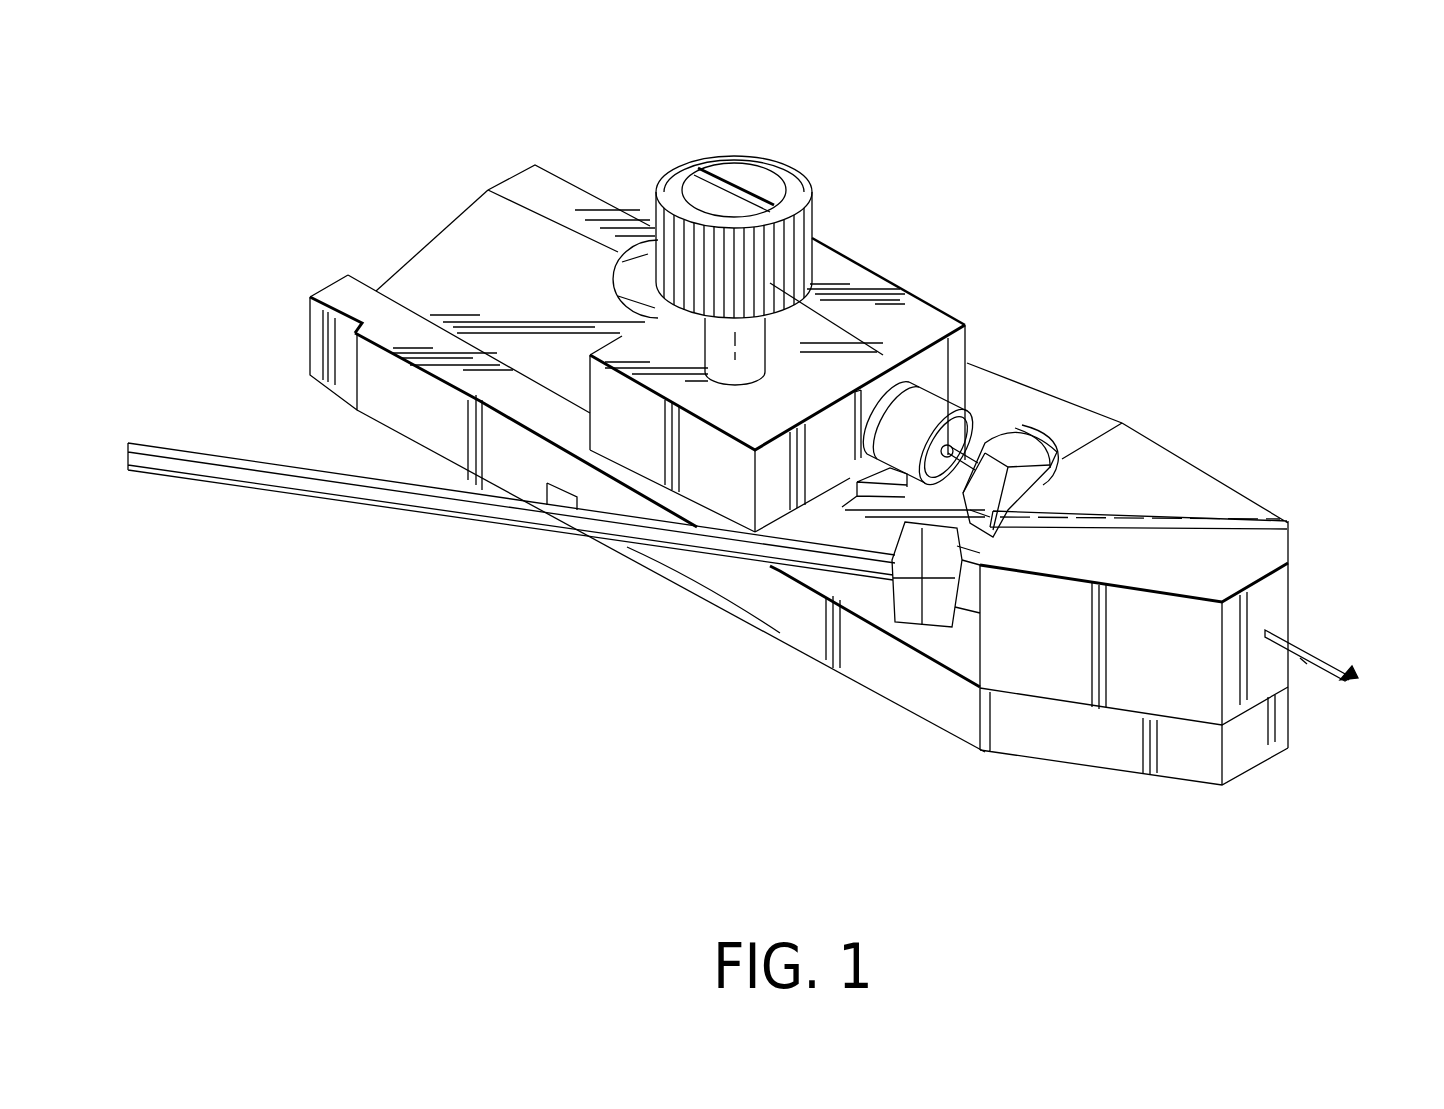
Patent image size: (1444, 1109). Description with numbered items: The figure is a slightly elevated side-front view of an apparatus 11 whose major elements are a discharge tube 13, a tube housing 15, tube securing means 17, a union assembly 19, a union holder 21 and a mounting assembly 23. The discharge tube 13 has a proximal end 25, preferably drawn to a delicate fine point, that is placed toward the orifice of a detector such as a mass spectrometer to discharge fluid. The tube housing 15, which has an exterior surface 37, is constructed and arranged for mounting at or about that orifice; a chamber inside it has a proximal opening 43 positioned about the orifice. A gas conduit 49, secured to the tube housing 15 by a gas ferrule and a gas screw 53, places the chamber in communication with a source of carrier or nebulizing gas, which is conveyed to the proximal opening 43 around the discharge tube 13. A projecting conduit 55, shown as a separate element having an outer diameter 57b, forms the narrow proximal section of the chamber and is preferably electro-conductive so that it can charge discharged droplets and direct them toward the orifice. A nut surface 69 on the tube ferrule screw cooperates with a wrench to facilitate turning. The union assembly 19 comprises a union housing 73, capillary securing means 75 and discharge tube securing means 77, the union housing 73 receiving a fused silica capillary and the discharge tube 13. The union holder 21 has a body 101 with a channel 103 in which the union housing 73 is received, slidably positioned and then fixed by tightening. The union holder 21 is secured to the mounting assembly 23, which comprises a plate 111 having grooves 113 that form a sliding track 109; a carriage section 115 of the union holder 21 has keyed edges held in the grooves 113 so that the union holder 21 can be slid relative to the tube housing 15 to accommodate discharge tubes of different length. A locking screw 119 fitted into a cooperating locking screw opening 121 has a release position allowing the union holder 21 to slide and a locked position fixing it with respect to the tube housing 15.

The apparatus 11 is at (1042, 146).
The discharge tube 13 is at (975, 435).
The tube housing 15 is at (1190, 497).
The tube securing means 17 is at (1047, 460).
The union assembly 19 is at (813, 340).
The union holder 21 is at (822, 262).
The mounting assembly 23 is at (567, 203).
The proximal end 25 is at (1345, 675).
The exterior surface 37 is at (1075, 678).
The proximal opening 43 is at (1338, 672).
The gas conduit 49 is at (317, 488).
The gas screw 53 is at (923, 623).
The projecting conduit 55 is at (1303, 663).
The outer diameter 57b is at (1290, 642).
The nut surface 69 is at (1022, 428).
The union housing 73 is at (847, 360).
The capillary securing means 75 is at (617, 292).
The discharge tube securing means 77 is at (920, 395).
The body 101 is at (933, 307).
The channel 103 is at (848, 432).
The sliding track 109 is at (377, 288).
The plate 111 is at (322, 358).
The grooves 113 is at (460, 257).
The carriage section 115 is at (826, 513).
The locking screw 119 is at (757, 160).
The locking screw opening 121 is at (705, 362).